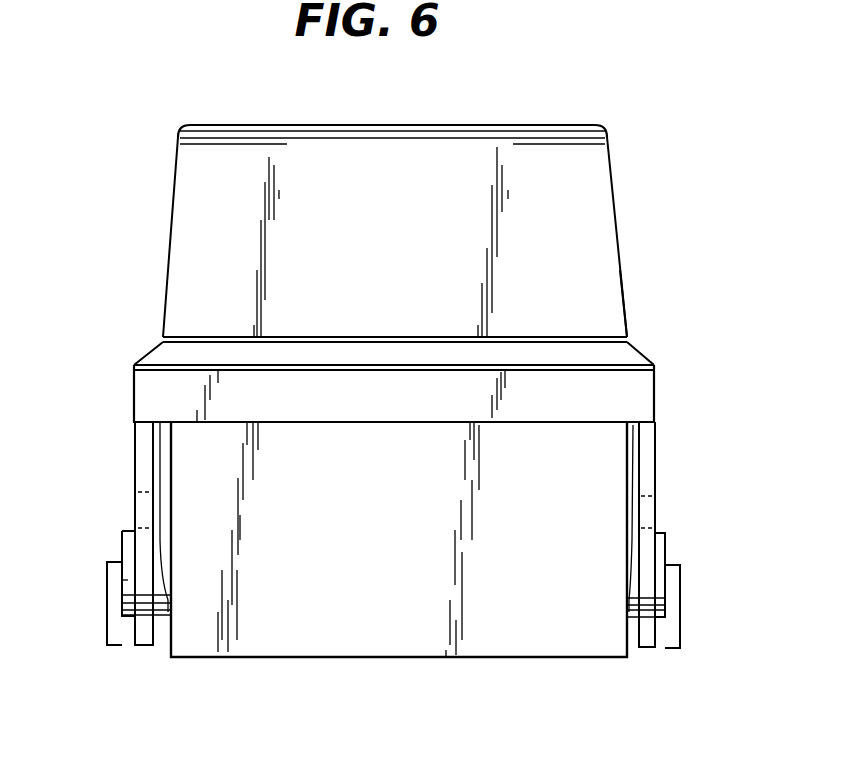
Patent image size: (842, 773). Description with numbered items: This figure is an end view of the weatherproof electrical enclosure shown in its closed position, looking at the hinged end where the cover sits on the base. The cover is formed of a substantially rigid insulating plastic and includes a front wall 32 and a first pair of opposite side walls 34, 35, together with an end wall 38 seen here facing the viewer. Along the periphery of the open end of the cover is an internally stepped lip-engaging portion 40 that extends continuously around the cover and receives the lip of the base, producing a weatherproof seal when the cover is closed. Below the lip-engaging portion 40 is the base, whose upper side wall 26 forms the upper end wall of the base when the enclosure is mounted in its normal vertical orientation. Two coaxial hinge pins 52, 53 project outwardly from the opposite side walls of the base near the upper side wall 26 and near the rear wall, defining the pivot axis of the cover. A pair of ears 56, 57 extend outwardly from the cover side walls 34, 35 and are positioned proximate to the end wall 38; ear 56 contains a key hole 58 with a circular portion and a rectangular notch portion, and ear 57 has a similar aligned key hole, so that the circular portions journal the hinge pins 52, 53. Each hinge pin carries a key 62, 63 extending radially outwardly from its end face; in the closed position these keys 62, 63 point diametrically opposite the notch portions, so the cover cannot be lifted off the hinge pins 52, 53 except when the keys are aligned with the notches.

The upper side wall 26 is at (388, 622).
The front wall 32 is at (406, 126).
The side wall 34 is at (164, 259).
The side wall 35 is at (620, 264).
The end wall 38 is at (600, 206).
The lip-engaging portion 40 is at (654, 382).
The hinge pin 52 is at (122, 548).
The hinge pin 53 is at (666, 542).
The ear 56 is at (135, 438).
The ear 57 is at (656, 468).
The key hole 58 is at (625, 12).
The key 62 is at (107, 620).
The key 63 is at (681, 586).